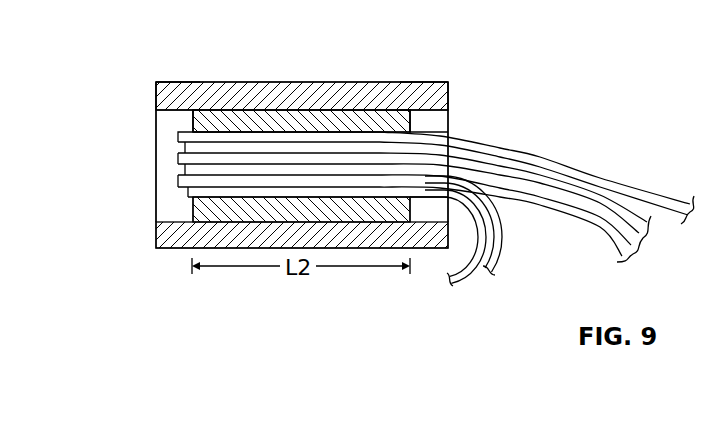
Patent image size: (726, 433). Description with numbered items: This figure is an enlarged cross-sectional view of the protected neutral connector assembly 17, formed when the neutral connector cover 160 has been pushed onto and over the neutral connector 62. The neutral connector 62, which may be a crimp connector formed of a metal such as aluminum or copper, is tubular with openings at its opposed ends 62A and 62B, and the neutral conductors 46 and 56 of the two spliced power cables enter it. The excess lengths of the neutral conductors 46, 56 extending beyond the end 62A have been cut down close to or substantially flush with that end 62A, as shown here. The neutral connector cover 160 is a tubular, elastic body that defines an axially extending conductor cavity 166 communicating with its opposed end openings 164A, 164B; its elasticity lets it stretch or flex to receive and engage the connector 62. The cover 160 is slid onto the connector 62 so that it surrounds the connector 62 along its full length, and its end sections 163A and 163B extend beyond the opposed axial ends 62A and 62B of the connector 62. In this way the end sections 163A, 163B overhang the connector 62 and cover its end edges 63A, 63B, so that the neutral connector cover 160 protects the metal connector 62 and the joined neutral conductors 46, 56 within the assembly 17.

The protected neutral connector assembly 17 is at (480, 78).
The neutral connector cover 160 is at (247, 76).
The end section of the cover 163A is at (176, 90).
The end section of the cover 163B is at (436, 92).
The conductor cavity 166 is at (263, 104).
The neutral connector 62 is at (352, 122).
The end of the neutral connector 62A is at (192, 121).
The end of the neutral connector 62B is at (411, 128).
The end edge of the connector 63A is at (192, 205).
The end edge of the connector 63B is at (428, 232).
The end opening of the cover 164A is at (150, 158).
The end opening of the cover 164B is at (470, 132).
The neutral conductors 56 is at (598, 203).
The neutral conductors 46 is at (474, 266).